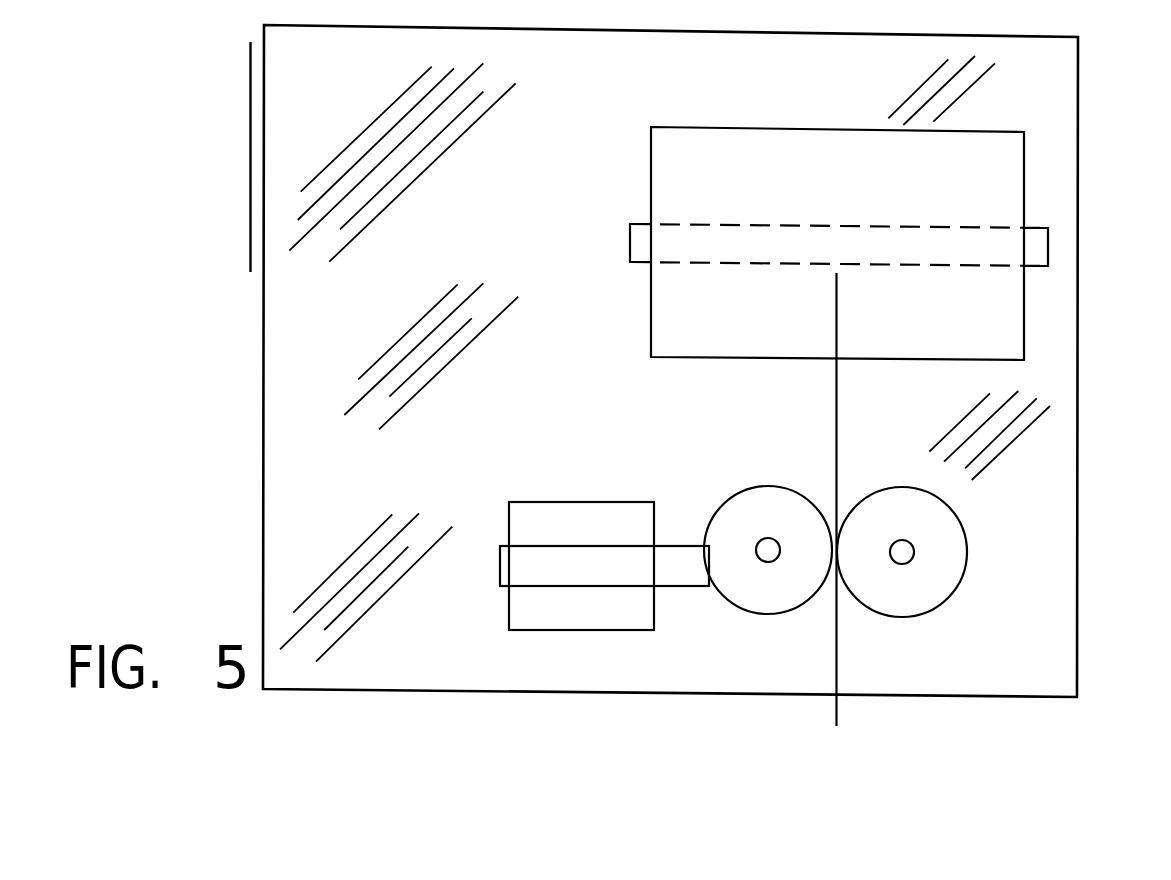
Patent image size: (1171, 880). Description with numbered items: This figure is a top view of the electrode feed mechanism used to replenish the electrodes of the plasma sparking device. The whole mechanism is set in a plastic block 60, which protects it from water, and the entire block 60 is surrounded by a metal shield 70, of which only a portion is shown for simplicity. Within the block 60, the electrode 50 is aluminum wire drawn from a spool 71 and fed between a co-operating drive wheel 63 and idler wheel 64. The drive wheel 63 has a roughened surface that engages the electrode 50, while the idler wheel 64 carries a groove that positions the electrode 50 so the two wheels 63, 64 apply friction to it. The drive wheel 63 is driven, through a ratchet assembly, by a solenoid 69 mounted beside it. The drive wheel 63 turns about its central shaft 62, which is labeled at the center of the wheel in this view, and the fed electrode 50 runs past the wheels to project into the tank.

The electrode 50 is at (837, 712).
The plastic block 60 is at (1057, 338).
The shaft 62 is at (763, 553).
The drive wheel 63 is at (753, 512).
The idler wheel 64 is at (923, 587).
The solenoid 69 is at (613, 522).
The metal shield 70 is at (250, 232).
The spool 71 is at (1005, 201).